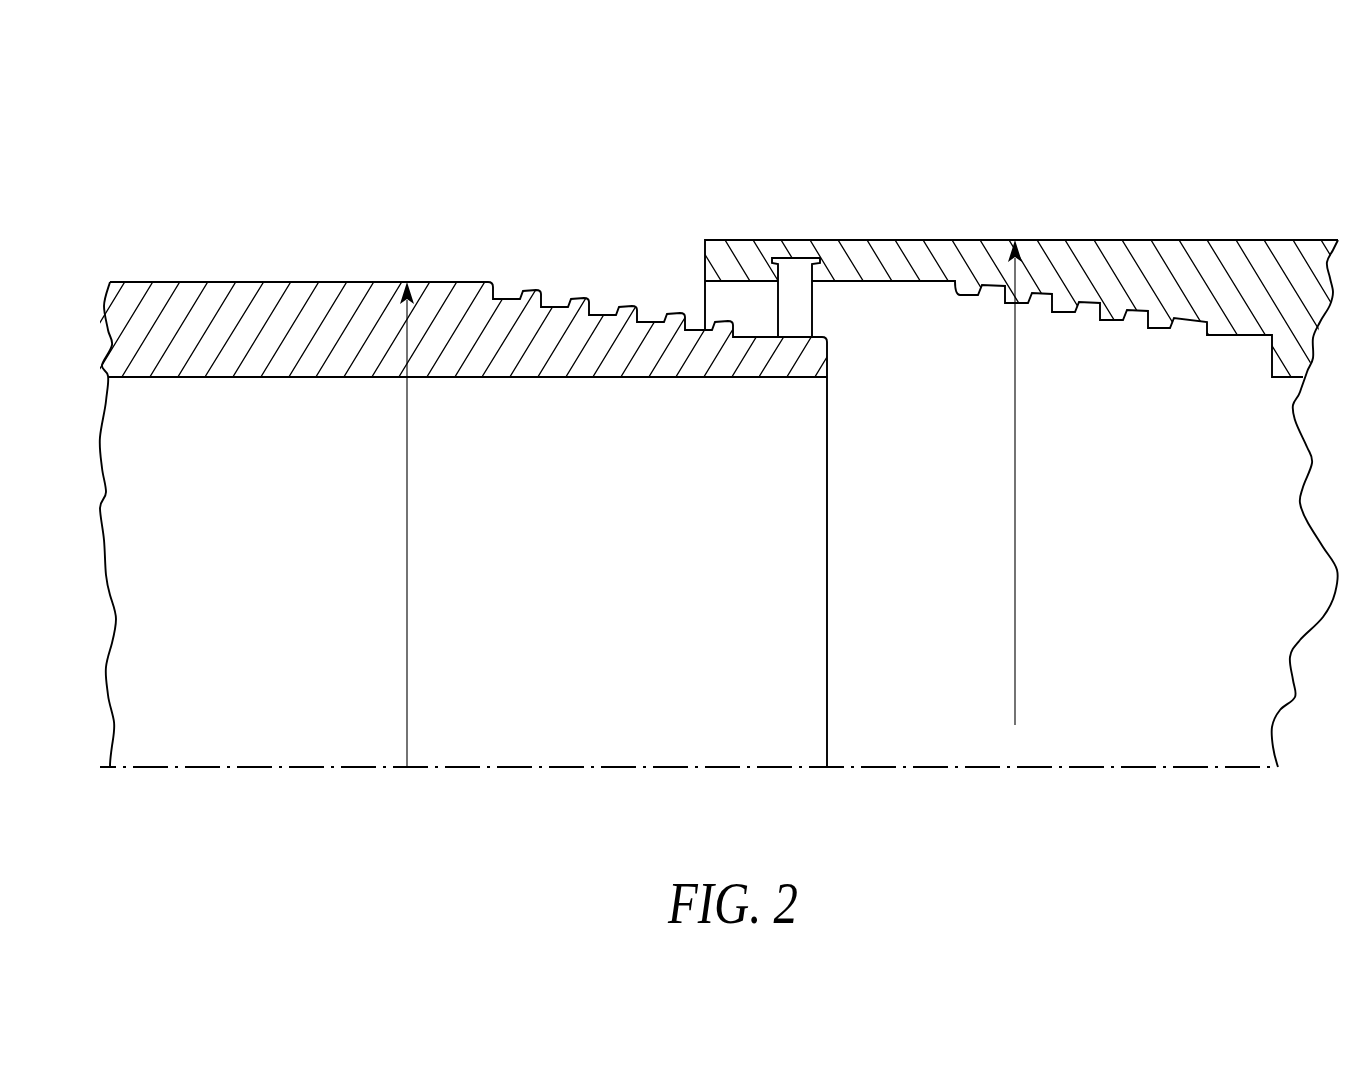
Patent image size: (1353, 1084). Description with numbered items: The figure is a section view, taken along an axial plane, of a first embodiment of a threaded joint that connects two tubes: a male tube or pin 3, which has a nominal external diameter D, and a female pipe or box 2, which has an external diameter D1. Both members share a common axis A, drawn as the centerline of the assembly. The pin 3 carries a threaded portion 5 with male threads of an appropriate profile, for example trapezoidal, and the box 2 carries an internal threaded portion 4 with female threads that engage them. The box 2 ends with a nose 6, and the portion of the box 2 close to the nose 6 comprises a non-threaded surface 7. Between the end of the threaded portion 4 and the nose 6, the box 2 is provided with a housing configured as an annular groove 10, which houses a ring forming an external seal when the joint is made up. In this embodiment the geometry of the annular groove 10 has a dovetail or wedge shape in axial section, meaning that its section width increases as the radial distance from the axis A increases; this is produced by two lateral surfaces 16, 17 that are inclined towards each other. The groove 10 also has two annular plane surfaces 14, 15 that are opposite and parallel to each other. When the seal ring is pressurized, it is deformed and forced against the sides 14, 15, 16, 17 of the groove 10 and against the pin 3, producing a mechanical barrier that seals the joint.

The box 2 is at (1127, 260).
The pin 3 is at (300, 300).
The internal threaded portion 4 is at (1060, 305).
The threaded portion 5 is at (577, 290).
The nose 6 is at (702, 256).
The non-threaded surface 7 is at (924, 283).
The annular groove 10 is at (793, 258).
The annular plane surface 14 is at (782, 292).
The annular plane surface 15 is at (812, 290).
The lateral surface 16 is at (765, 270).
The lateral surface 17 is at (824, 266).
The axis A is at (1165, 767).
The nominal external diameter D is at (422, 524).
The external diameter D1 is at (1042, 482).